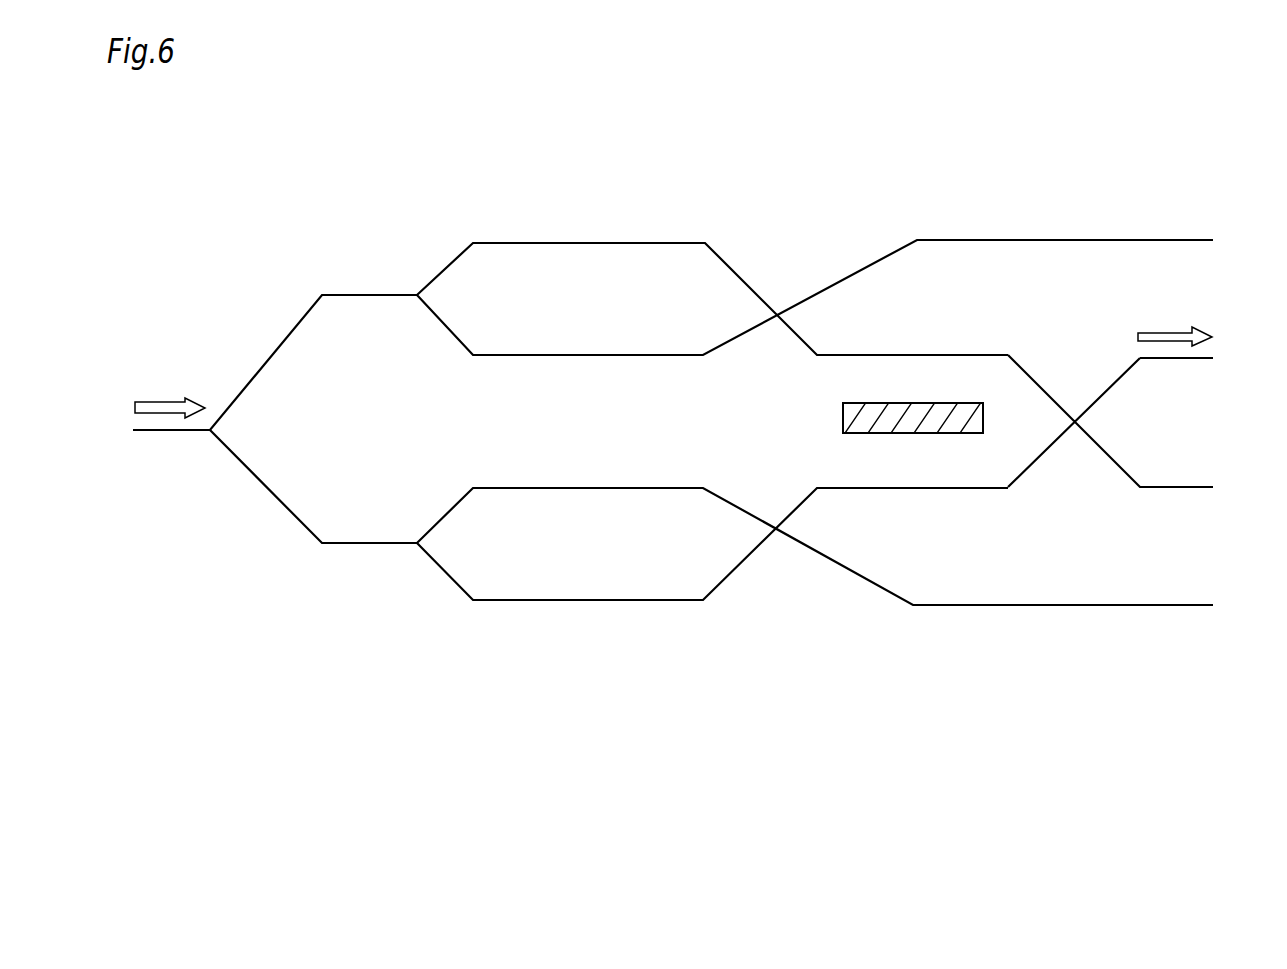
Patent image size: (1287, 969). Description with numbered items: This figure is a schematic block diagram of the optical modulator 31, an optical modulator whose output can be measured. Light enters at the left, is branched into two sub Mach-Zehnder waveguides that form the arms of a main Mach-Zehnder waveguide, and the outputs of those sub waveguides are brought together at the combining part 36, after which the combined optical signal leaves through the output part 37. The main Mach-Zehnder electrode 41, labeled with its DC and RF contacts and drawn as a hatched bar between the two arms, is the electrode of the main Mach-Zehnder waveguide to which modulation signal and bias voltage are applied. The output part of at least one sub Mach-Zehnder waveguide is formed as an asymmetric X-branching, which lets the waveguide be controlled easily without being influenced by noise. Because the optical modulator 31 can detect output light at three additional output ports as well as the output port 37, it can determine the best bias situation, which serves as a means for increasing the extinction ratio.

The optical modulator 31 is at (828, 184).
The combining part 36 is at (1078, 428).
The output part 37 is at (1213, 360).
The main Mach-Zehnder electrode 41 is at (840, 420).